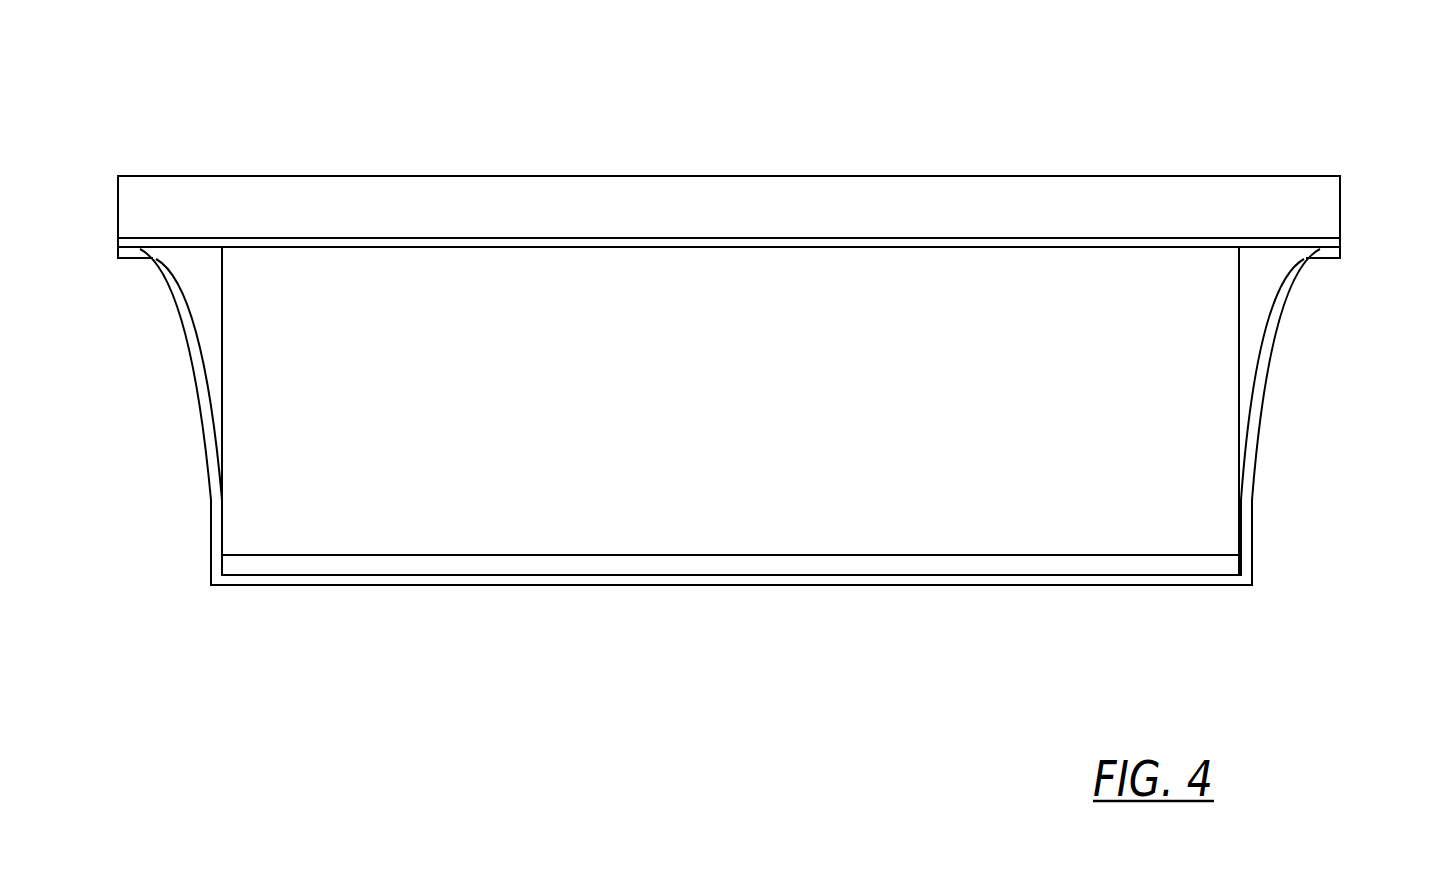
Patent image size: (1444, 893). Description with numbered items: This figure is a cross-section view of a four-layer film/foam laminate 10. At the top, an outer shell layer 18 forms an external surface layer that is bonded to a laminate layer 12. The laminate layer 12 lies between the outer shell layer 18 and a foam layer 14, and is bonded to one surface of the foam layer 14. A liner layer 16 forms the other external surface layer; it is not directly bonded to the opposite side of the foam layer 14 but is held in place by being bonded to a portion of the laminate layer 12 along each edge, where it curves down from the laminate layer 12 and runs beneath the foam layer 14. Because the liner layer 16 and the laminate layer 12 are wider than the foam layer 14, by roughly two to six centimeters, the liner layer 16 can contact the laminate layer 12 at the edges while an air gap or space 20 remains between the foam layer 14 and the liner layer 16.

The structural member assembly 10 is at (1104, 126).
The laminate layer 12 is at (1342, 241).
The foam layer 14 is at (756, 402).
The liner layer 16 is at (212, 510).
The outer shell layer 18 is at (306, 196).
The air gap or space 20 is at (313, 563).